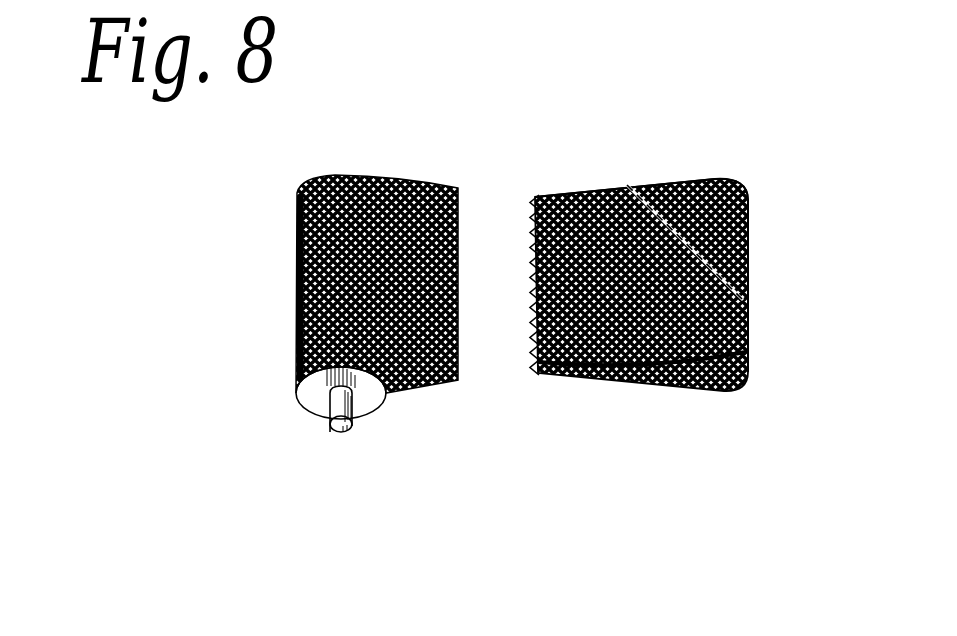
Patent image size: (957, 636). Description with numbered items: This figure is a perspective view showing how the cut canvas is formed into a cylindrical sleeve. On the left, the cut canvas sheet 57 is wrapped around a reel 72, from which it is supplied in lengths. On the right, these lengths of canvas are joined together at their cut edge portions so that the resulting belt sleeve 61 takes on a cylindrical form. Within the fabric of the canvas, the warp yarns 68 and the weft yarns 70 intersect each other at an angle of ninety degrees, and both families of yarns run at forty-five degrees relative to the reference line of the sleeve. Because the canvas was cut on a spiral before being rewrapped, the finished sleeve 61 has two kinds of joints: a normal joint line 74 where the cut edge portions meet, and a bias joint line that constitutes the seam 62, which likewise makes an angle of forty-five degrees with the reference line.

The mesh sleeve 57 is at (413, 377).
The reel 72 is at (333, 393).
The cylindrical sleeve 61 is at (676, 288).
The warp yarns 68 is at (705, 178).
The seam 62 is at (700, 253).
The weft yarns 70 is at (650, 187).
The normal joint line 74 is at (532, 360).